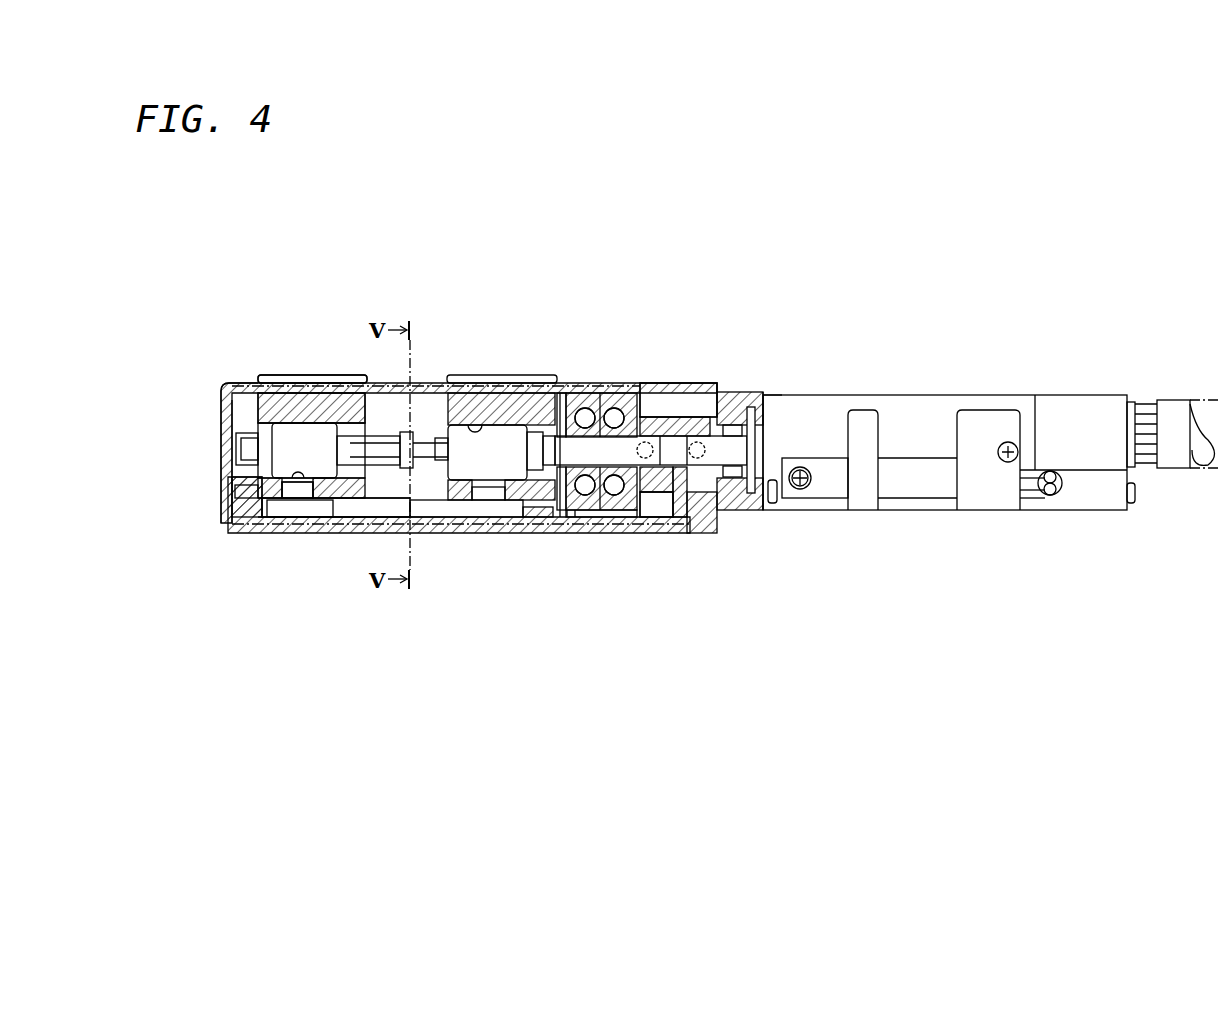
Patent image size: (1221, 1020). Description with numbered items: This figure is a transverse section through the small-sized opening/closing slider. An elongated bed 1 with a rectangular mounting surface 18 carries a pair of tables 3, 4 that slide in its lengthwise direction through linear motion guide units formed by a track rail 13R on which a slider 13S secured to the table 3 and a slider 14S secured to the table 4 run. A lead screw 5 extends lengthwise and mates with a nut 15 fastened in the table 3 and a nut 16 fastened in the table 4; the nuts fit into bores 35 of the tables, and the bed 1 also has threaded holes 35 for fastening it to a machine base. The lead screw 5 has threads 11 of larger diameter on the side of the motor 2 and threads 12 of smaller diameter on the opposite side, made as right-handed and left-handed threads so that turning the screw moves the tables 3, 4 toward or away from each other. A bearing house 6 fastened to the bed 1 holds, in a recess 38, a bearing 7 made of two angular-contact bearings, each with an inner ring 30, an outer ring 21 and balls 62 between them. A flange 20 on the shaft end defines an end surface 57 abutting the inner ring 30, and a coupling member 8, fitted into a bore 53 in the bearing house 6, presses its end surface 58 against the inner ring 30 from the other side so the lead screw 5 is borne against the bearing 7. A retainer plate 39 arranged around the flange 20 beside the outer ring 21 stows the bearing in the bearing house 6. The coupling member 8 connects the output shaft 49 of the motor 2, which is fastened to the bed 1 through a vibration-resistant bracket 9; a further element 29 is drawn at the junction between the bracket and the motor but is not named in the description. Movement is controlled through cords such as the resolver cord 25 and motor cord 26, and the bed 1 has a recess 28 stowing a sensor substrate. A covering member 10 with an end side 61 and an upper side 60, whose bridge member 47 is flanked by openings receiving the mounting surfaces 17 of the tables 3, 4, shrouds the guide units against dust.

The bed 1 is at (413, 530).
The motor 2 is at (1082, 413).
The table 3 is at (476, 425).
The table 4 is at (303, 425).
The lead screw 5 is at (387, 478).
The bearing house 6 is at (625, 378).
The bearing 7 is at (611, 378).
The coupling member 8 is at (703, 383).
The bracket 9 is at (740, 398).
The covering member 10 is at (222, 445).
The threads 11 is at (430, 388).
The threads 12 is at (340, 395).
The track rail 13R is at (372, 528).
The slider 13S is at (505, 530).
The slider 14S is at (290, 530).
The nut 15 is at (495, 440).
The nut 16 is at (290, 437).
The mounting surface 17 is at (355, 380).
The mounting surface 18 is at (603, 530).
The flange 20 is at (567, 530).
The outer ring 21 is at (590, 378).
The resolver cord 25 is at (1170, 448).
The motor cord 26 is at (1052, 495).
The recess 28 is at (318, 530).
The mounting plate 29 is at (778, 400).
The inner ring 30 is at (648, 378).
The threaded holes 35 is at (462, 380).
The recess 38 is at (577, 530).
The retainer plate 39 is at (560, 375).
The bridge member 47 is at (313, 405).
The output shaft 49 is at (766, 505).
The bore 53 is at (665, 378).
The end surface 57 is at (548, 375).
The end surface 58 is at (705, 520).
The upper side 60 is at (377, 372).
The end side 61 is at (222, 428).
The balls 62 is at (642, 535).